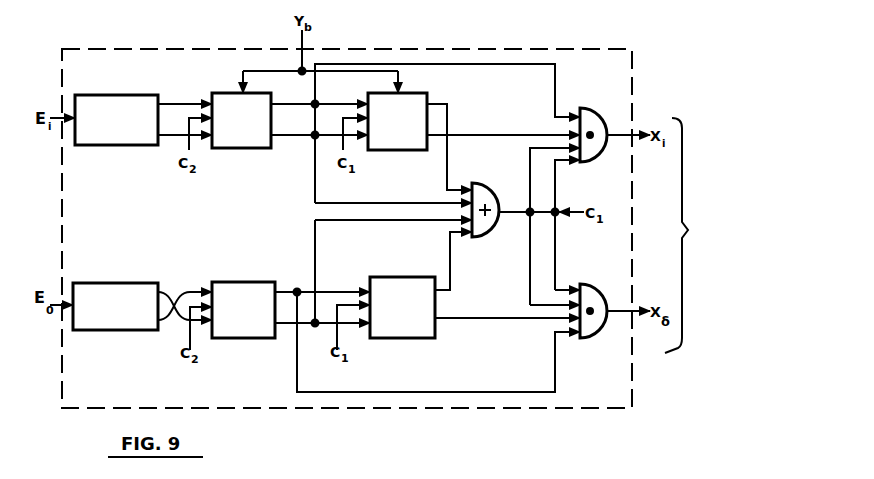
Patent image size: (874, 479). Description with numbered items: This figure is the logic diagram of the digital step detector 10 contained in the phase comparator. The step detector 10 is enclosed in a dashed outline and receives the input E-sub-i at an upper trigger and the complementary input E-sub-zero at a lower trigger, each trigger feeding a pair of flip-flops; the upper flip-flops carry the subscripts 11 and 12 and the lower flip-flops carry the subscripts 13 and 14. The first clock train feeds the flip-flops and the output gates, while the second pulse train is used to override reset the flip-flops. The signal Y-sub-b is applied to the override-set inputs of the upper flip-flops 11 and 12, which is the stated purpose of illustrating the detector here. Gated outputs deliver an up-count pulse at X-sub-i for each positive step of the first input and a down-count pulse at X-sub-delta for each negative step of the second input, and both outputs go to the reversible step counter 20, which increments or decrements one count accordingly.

The digital step detector 10 is at (455, 48).
The flip-flop F11 11 is at (241, 138).
The flip-flop F12 12 is at (397, 136).
The flip-flop F13 13 is at (243, 298).
The flip-flop F14 14 is at (402, 293).
The reversible step counter 20 is at (736, 235).